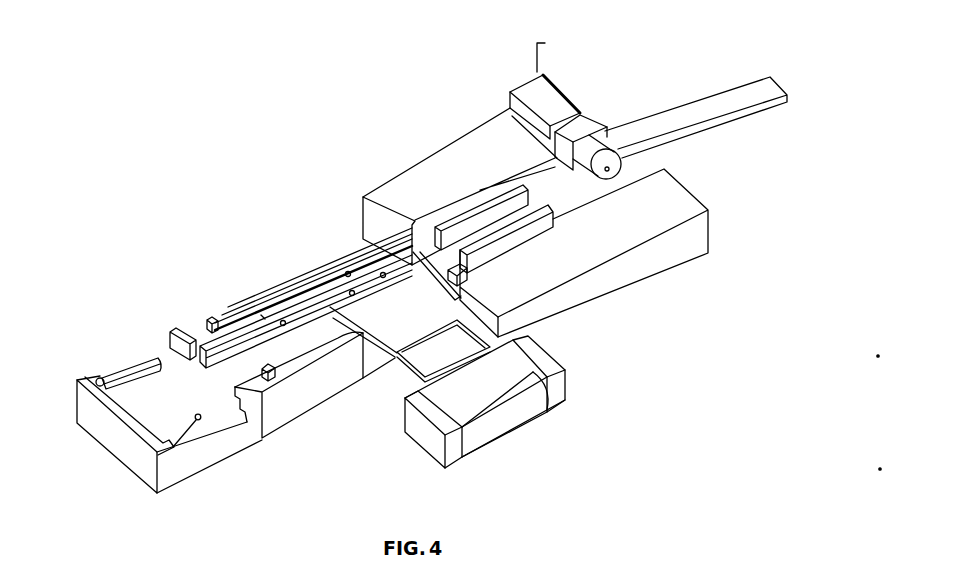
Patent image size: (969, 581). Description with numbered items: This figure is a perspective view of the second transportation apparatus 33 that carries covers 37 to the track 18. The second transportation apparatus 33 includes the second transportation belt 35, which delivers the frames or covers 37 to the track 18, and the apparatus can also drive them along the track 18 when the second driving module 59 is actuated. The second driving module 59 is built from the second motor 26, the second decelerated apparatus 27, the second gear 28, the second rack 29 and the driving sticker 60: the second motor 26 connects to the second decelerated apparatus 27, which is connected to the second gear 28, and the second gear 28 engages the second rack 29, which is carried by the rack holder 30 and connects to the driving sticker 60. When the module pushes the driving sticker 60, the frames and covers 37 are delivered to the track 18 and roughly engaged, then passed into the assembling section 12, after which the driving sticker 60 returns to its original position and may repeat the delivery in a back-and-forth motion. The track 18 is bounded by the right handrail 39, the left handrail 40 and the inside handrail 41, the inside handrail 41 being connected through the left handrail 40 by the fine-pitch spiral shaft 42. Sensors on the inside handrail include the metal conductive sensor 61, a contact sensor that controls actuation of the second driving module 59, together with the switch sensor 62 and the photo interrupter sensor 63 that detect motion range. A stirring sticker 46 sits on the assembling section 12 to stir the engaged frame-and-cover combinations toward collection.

The assembling section 12 is at (219, 405).
The track 18 is at (265, 354).
The second motor 26 is at (547, 101).
The second decelerated apparatus 27 is at (580, 132).
The second gear 28 is at (598, 157).
The second rack 29 is at (693, 127).
The rack holder 30 is at (535, 228).
The second transportation apparatus 33 is at (528, 426).
The second transportation belt 35 is at (523, 390).
The cover 37 is at (440, 353).
The right handrail 39 is at (308, 362).
The left handrail 40 is at (320, 268).
The inside handrail 41 is at (300, 303).
The spiral shaft 42 is at (247, 310).
The stirring sticker 46 is at (127, 368).
The second driving module 59 is at (553, 51).
The driving sticker 60 is at (412, 250).
The metal conductive sensor 61 is at (383, 273).
The switch sensor 62 is at (170, 340).
The photo interrupter sensor 63 is at (157, 453).